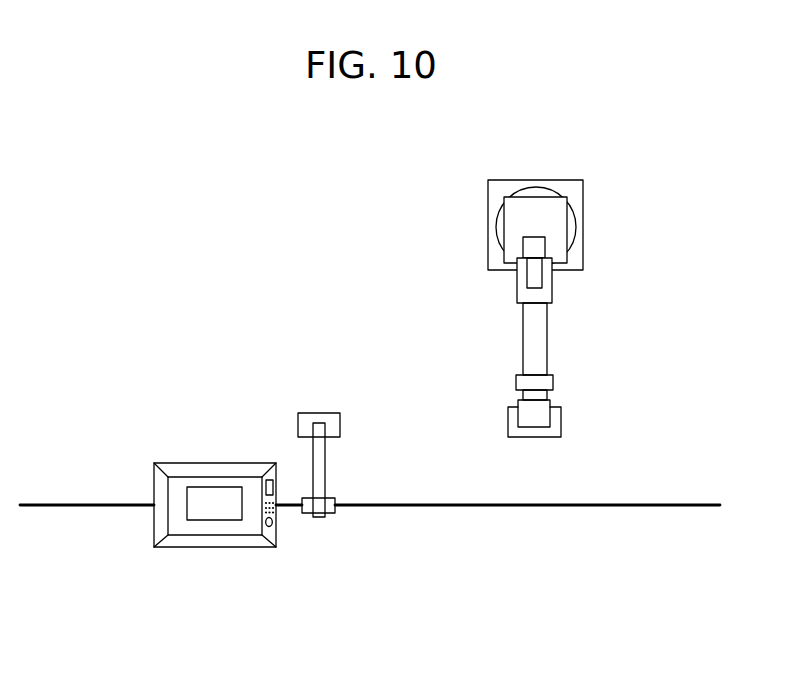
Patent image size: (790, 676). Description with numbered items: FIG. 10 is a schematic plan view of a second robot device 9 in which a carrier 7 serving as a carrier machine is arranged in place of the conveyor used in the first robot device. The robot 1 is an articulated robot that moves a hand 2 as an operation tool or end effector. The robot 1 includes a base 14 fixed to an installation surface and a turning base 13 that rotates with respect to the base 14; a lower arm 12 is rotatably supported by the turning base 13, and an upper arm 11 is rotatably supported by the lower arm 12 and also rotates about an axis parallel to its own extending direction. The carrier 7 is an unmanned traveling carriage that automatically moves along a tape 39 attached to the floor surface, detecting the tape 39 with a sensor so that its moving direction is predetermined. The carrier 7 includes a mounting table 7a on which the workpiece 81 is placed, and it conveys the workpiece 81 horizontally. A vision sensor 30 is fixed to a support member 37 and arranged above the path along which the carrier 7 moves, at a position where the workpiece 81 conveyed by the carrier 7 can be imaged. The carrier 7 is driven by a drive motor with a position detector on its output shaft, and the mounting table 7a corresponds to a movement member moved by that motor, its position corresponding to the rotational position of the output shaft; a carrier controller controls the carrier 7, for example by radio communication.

The second robot device 9 is at (300, 197).
The robot 1 is at (552, 288).
The upper arm 11 is at (540, 340).
The lower arm 12 is at (533, 247).
The turning base 13 is at (552, 213).
The base 14 is at (498, 192).
The hand 2 is at (556, 415).
The carrier 7 is at (185, 548).
The mounting table 7a is at (238, 545).
The workpiece 81 is at (203, 500).
The vision sensor 30 is at (308, 507).
The support member 37 is at (330, 422).
The tape 39 is at (695, 507).